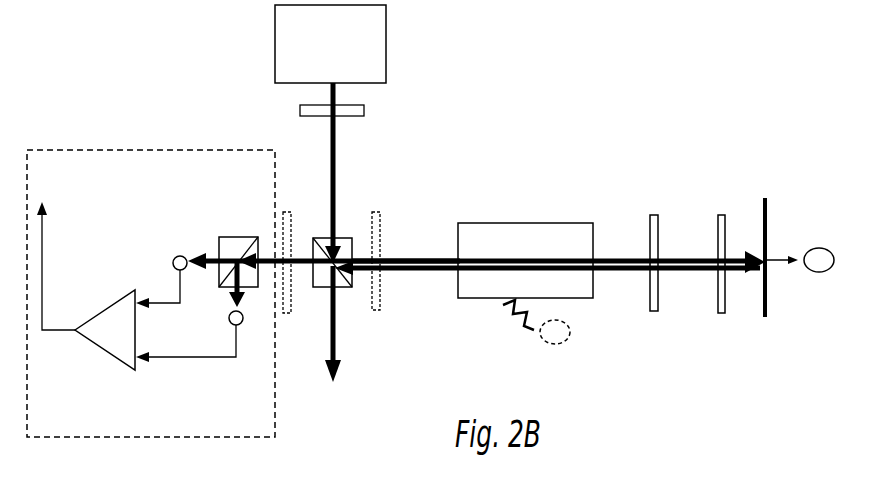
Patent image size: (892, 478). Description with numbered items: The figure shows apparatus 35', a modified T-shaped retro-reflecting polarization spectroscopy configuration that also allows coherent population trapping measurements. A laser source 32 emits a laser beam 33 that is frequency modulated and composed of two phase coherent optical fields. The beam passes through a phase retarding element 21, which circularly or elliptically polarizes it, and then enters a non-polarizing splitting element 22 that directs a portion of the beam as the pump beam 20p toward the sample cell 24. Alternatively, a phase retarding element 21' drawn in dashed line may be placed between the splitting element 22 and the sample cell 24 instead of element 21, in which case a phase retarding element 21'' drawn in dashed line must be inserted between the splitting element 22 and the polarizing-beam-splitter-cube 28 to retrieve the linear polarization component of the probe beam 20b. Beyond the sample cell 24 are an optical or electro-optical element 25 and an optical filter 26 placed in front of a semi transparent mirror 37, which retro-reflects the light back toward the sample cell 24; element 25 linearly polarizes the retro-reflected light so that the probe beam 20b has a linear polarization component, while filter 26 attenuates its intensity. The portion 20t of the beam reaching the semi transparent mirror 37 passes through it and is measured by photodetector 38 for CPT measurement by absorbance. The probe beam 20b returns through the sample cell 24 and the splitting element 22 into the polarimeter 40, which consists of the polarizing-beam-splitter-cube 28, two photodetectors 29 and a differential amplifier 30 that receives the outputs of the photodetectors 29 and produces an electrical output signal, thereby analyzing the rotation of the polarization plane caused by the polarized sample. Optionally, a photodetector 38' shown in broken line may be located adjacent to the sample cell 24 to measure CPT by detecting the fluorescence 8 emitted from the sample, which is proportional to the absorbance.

The fluorescence 8 is at (496, 321).
The pump beam 20p is at (415, 257).
The probe beam 20b is at (593, 272).
The transmitted beam portion 20t is at (783, 245).
The phase retarding element 21 is at (360, 101).
The phase retarding element 21' is at (407, 234).
The phase retarding element 21'' is at (263, 214).
The non-polarizing splitting element 22 is at (322, 285).
The sample cell 24 is at (532, 226).
The optical or electro-optical element 25 is at (650, 220).
The optical filter 26 is at (718, 225).
The polarizing-beam-splitter-cube 28 is at (240, 237).
The photodetectors 29 is at (180, 256).
The differential amplifier 30 is at (123, 357).
The laser source 32 is at (387, 43).
The laser beam 33 is at (333, 95).
The apparatus 35' is at (476, 173).
The semi transparent mirror 37 is at (767, 220).
The photodetector 38 is at (804, 298).
The photodetector 38' is at (567, 370).
The polarimeter 40 is at (103, 150).